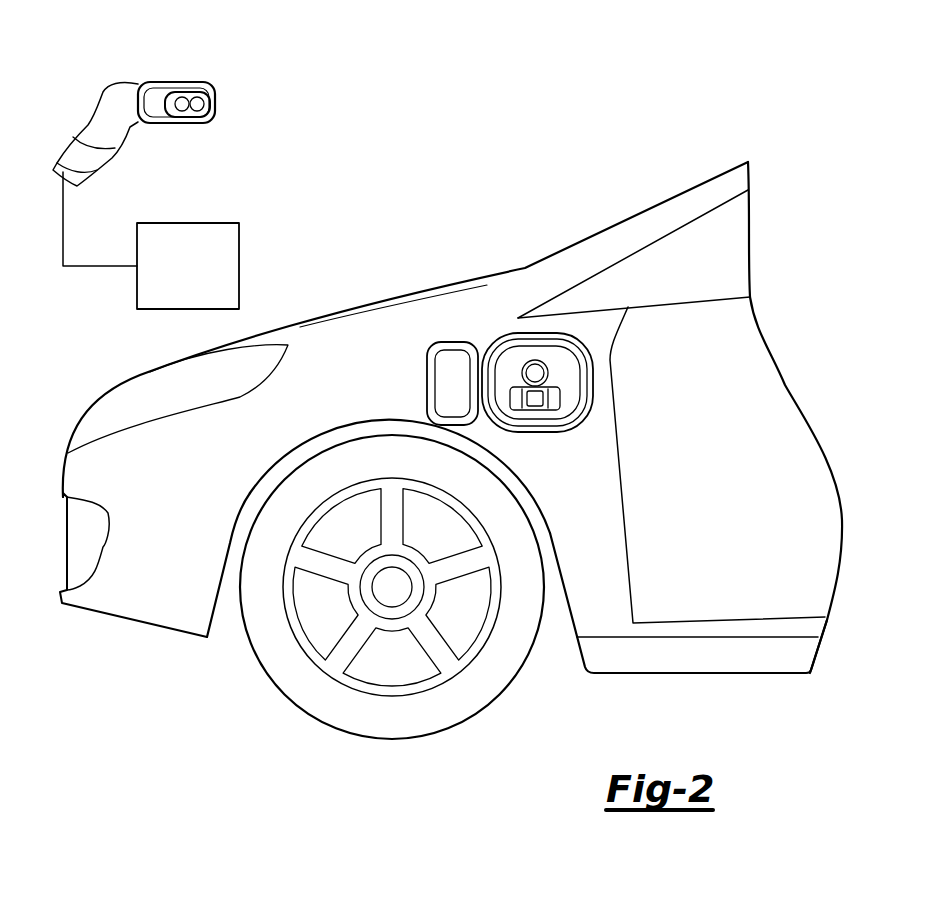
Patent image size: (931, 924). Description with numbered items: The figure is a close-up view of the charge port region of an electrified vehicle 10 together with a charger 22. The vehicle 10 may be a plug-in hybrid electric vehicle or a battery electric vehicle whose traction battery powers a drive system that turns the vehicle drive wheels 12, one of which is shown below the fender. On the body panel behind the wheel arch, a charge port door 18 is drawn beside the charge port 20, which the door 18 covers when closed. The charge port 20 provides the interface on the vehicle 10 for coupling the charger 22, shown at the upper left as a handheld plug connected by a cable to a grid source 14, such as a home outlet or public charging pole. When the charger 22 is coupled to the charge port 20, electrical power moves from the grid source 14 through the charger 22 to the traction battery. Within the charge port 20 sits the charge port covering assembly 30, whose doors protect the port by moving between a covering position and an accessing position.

The vehicle 10 is at (462, 308).
The vehicle drive wheels 12 is at (392, 740).
The grid source 14 is at (239, 266).
The charge port door 18 is at (447, 375).
The charge port 20 is at (553, 380).
The charger 22 is at (148, 80).
The charge port covering assembly 30 is at (560, 398).